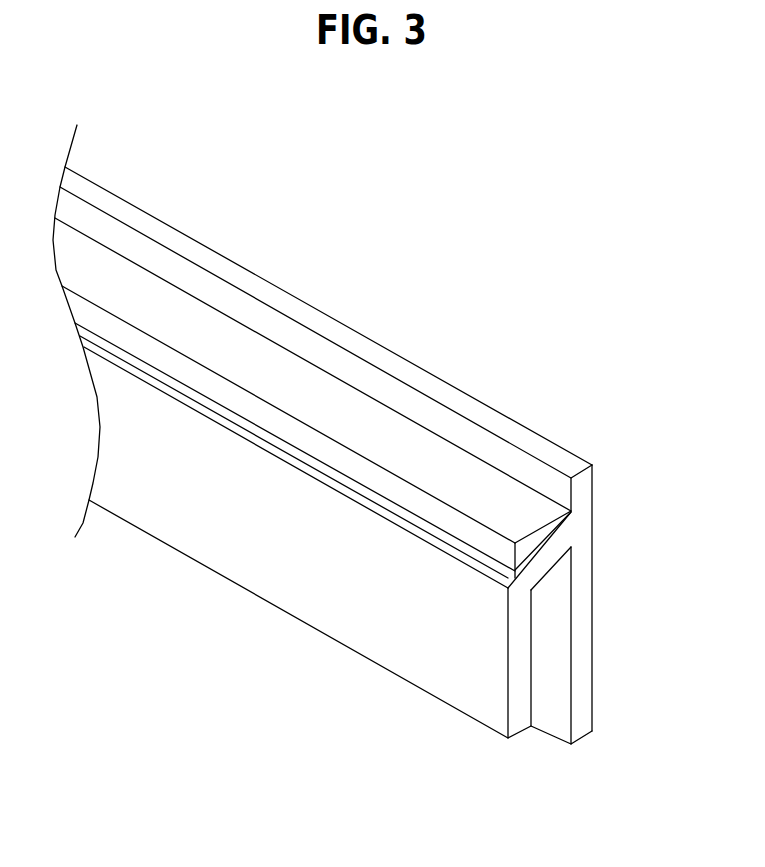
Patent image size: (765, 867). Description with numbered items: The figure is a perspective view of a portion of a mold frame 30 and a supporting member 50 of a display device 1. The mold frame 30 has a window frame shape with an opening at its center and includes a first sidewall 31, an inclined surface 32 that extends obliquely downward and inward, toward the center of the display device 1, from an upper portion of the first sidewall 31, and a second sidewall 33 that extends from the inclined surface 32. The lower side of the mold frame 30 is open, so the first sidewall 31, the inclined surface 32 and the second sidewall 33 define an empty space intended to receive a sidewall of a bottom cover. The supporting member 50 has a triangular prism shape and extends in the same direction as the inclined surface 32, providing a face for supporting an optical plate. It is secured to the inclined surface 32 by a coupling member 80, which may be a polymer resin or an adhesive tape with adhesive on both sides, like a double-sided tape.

The display device 1 is at (149, 176).
The supporting member 50 is at (373, 428).
The coupling member 80 is at (563, 528).
The mold frame 30 is at (377, 515).
The first sidewall 31 is at (583, 655).
The inclined surface 32 is at (540, 565).
The second sidewall 33 is at (653, 598).